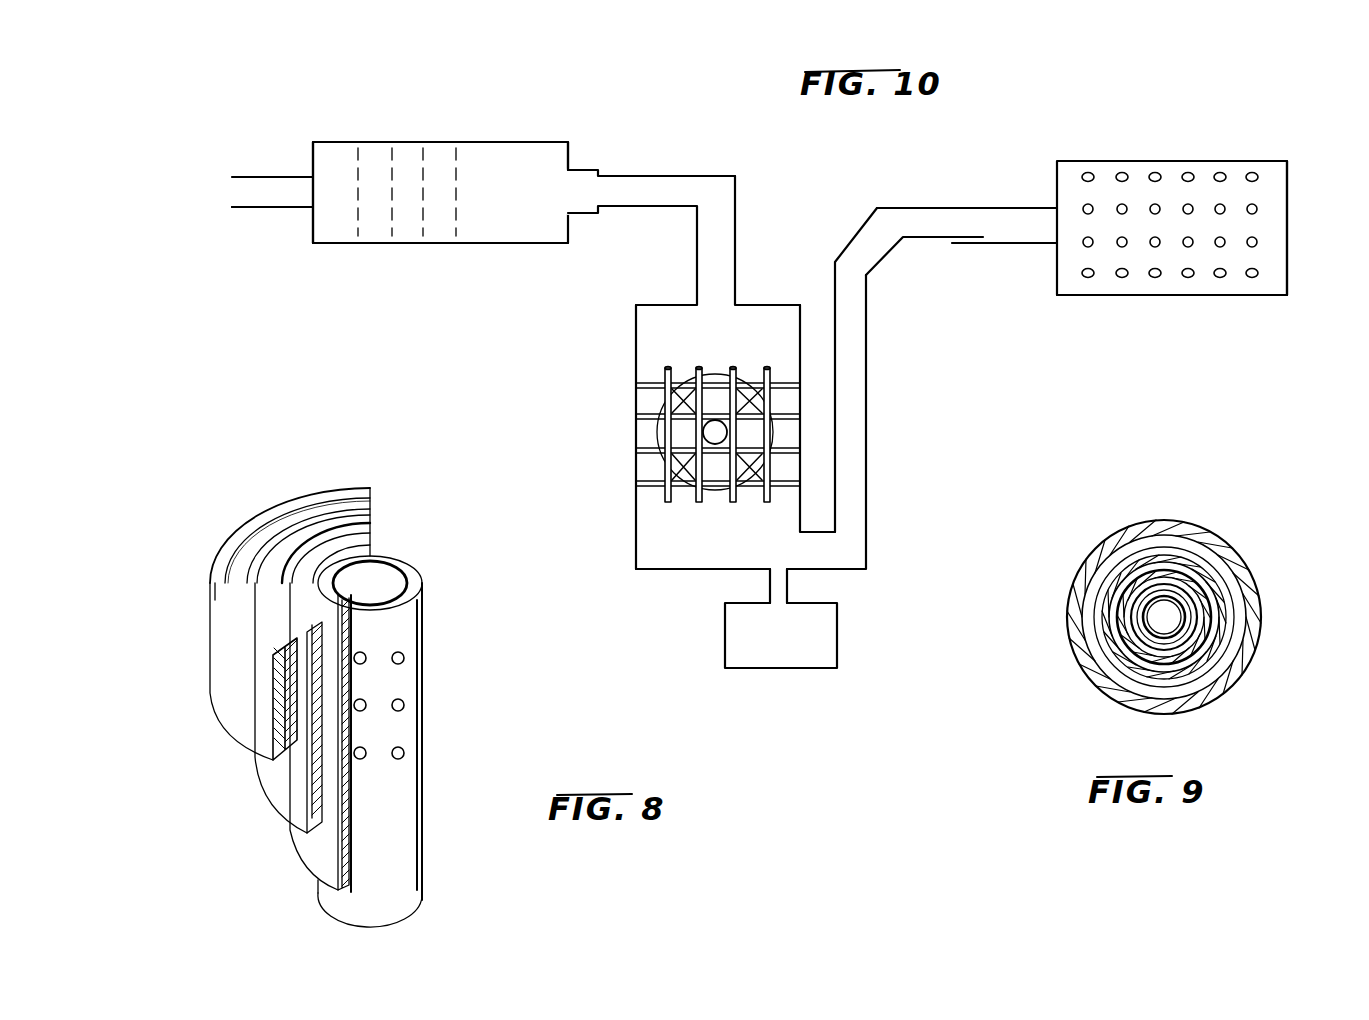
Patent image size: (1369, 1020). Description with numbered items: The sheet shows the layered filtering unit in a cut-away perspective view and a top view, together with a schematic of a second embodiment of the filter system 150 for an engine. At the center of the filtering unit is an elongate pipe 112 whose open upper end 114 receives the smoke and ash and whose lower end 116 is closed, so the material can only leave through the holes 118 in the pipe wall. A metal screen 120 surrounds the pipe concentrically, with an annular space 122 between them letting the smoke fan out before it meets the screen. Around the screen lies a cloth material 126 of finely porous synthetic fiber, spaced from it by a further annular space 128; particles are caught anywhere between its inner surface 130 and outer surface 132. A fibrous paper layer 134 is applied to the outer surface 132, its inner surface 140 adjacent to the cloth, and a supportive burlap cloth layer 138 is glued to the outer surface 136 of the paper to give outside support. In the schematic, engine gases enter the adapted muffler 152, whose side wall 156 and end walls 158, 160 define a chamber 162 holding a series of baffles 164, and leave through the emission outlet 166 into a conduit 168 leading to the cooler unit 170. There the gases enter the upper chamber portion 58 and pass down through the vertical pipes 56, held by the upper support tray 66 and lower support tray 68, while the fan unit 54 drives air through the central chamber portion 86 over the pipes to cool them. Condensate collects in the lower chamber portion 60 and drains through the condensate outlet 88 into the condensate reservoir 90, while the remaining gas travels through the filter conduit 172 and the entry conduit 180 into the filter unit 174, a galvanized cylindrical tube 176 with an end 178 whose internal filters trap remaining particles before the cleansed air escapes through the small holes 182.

In FIG. 10, the fan unit 54 is at (672, 480).
In FIG. 10, the vertical pipes 56 is at (660, 428).
In FIG. 10, the upper chamber portion 58 is at (650, 341).
In FIG. 10, the lower chamber portion 60 is at (645, 553).
In FIG. 10, the upper support tray 66 is at (648, 385).
In FIG. 10, the lower support tray 68 is at (688, 483).
In FIG. 10, the central chamber portion 86 is at (650, 465).
In FIG. 10, the condensate outlet 88 is at (777, 585).
In FIG. 10, the condensate reservoir 90 is at (802, 650).
In FIG. 8, the elongate pipe 112 is at (422, 735).
In FIG. 9, the elongate pipe 112 is at (1187, 617).
In FIG. 8, the upper end 114 is at (422, 612).
In FIG. 8, the lower end 116 is at (403, 905).
In FIG. 8, the holes 118 is at (404, 657).
In FIG. 8, the screen 120 is at (370, 540).
In FIG. 9, the screen 120 is at (1187, 587).
In FIG. 8, the annular space 122 is at (380, 545).
In FIG. 9, the annular space 122 is at (1190, 607).
In FIG. 8, the cloth material 126 is at (273, 632).
In FIG. 9, the cloth material 126 is at (1152, 560).
In FIG. 8, the annular space 128 is at (357, 530).
In FIG. 9, the annular space 128 is at (1173, 570).
In FIG. 8, the inner surface 130 is at (292, 579).
In FIG. 8, the outer surface 132 is at (257, 573).
In FIG. 8, the fibrous paper layer 134 is at (340, 500).
In FIG. 9, the fibrous paper layer 134 is at (1112, 567).
In FIG. 8, the outer surface 136 is at (215, 568).
In FIG. 8, the supportive burlap cloth layer 138 is at (272, 508).
In FIG. 9, the supportive burlap cloth layer 138 is at (1075, 615).
In FIG. 8, the inner surface 140 is at (273, 543).
In FIG. 10, the filter system 150 is at (438, 93).
In FIG. 10, the adapted muffler 152 is at (337, 142).
In FIG. 10, the side wall 156 is at (556, 142).
In FIG. 10, the end wall 158 is at (313, 241).
In FIG. 10, the end wall 160 is at (570, 233).
In FIG. 10, the chamber 162 is at (522, 232).
In FIG. 10, the baffles 164 is at (391, 227).
In FIG. 10, the emission outlet 166 is at (590, 178).
In FIG. 10, the conduit 168 is at (726, 180).
In FIG. 10, the cooler unit 170 is at (597, 413).
In FIG. 10, the filter conduit 172 is at (855, 450).
In FIG. 10, the filter unit 174 is at (1198, 132).
In FIG. 10, the galvanized cylindrical tube 176 is at (1186, 296).
In FIG. 10, the panel end wall 178 is at (1288, 172).
In FIG. 10, the entry conduit 180 is at (990, 210).
In FIG. 10, the small holes 182 is at (1122, 278).